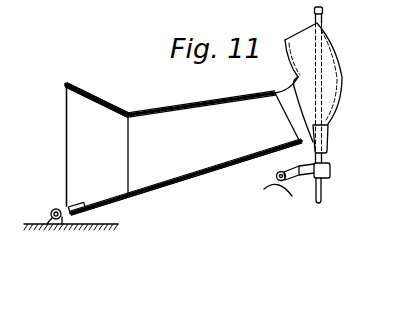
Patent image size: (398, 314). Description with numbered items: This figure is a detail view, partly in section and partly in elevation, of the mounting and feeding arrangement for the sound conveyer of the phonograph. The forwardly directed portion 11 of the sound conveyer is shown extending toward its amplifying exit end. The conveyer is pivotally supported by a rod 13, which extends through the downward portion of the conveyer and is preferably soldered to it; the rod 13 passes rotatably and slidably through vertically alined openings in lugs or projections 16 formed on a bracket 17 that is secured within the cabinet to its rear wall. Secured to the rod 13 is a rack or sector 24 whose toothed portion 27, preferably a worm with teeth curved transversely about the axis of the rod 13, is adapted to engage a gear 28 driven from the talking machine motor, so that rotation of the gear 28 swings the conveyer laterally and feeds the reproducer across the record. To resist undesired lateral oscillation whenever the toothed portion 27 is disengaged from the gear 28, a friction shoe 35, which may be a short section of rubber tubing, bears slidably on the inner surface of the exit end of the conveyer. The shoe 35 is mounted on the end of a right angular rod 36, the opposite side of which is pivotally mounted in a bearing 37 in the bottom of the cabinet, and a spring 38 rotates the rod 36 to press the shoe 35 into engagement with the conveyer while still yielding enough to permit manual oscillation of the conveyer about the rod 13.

The forwardly directed portion of the sound conveyer 11 is at (192, 107).
The rod 13 is at (325, 188).
The lugs or projections 16 is at (33, 145).
The bracket 17 is at (117, 110).
The rack or sector 24 is at (296, 176).
The toothed portion 27 is at (276, 175).
The gear 28 is at (264, 189).
The friction shoe 35 is at (70, 204).
The right angular rod 36 is at (51, 220).
The bearing 37 is at (73, 214).
The spring 38 is at (37, 230).